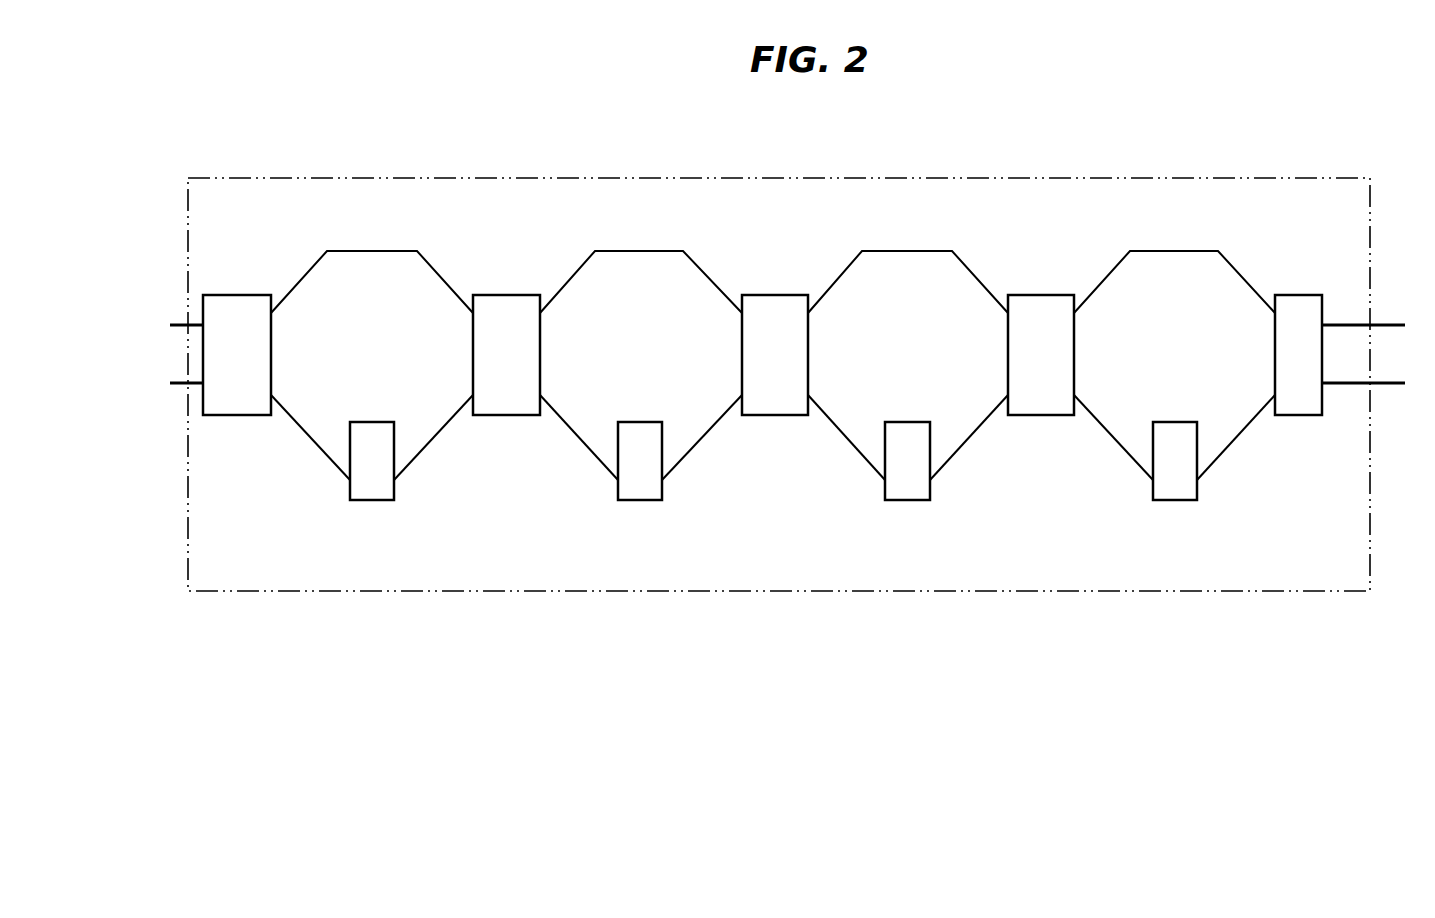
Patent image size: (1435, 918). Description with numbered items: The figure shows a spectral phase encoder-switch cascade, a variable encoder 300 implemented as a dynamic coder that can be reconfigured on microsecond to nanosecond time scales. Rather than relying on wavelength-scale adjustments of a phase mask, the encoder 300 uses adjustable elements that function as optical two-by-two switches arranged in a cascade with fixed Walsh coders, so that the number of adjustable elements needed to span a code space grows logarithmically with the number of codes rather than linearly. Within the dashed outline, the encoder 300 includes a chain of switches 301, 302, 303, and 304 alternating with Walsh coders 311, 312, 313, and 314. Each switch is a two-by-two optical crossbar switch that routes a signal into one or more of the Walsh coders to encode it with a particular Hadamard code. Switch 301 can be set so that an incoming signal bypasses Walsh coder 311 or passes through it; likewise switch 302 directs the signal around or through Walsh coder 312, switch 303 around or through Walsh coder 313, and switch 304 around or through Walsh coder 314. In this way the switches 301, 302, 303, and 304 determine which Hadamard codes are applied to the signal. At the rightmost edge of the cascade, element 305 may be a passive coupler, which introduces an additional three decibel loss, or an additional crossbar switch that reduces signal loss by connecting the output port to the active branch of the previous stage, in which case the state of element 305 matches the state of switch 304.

The encoder 300 is at (416, 178).
The switch 301 is at (250, 293).
The switch 302 is at (534, 293).
The switch 303 is at (799, 293).
The switch 304 is at (1061, 293).
The rightmost element 305 is at (1312, 293).
The Walsh coder 311 is at (376, 420).
The Walsh coder 312 is at (652, 420).
The Walsh coder 313 is at (916, 420).
The Walsh coder 314 is at (1185, 420).